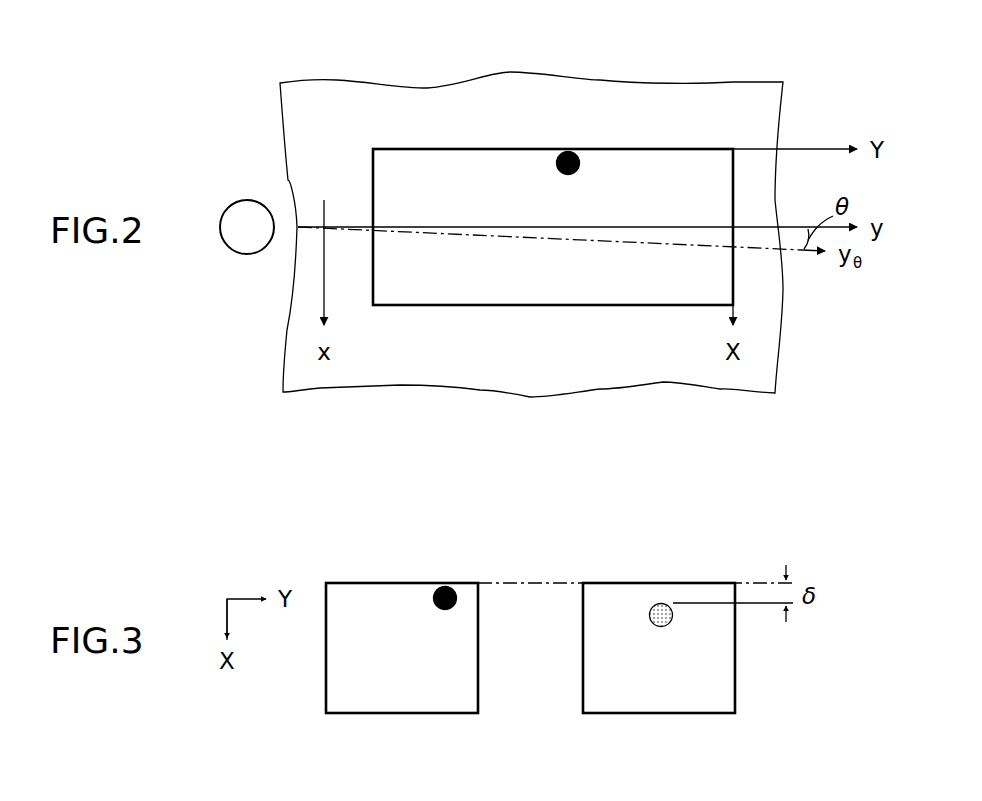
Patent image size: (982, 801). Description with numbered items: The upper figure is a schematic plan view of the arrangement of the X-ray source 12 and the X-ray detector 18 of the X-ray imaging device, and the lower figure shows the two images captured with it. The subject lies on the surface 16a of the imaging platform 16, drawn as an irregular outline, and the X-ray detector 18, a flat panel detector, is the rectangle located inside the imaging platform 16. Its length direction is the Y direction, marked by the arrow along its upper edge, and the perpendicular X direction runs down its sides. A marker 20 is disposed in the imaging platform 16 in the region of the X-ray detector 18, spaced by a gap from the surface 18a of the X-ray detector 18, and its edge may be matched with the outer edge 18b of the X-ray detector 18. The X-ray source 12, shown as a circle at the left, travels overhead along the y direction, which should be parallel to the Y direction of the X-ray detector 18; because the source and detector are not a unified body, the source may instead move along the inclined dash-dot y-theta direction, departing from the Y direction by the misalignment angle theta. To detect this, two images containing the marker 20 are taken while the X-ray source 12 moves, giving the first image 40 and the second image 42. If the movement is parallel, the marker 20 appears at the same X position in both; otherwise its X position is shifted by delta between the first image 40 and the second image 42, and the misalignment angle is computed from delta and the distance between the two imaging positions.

In FIG. 2, the X-ray source 12 is at (245, 237).
In FIG. 2, the imaging platform 16 is at (527, 68).
In FIG. 2, the surface of the imaging platform 16a is at (699, 100).
In FIG. 2, the X-ray detector 18 is at (458, 310).
In FIG. 2, the surface of the FPD 18a is at (570, 285).
In FIG. 2, the outer edge of the FPD 18b is at (442, 148).
In FIG. 2, the marker 20 is at (581, 163).
In FIG. 3, the marker 20 is at (436, 592).
In FIG. 3, the first image 40 is at (402, 688).
In FIG. 3, the second image 42 is at (667, 688).